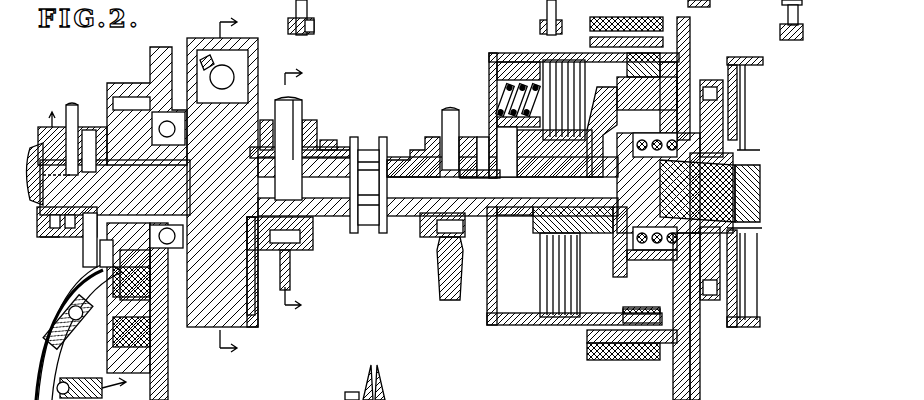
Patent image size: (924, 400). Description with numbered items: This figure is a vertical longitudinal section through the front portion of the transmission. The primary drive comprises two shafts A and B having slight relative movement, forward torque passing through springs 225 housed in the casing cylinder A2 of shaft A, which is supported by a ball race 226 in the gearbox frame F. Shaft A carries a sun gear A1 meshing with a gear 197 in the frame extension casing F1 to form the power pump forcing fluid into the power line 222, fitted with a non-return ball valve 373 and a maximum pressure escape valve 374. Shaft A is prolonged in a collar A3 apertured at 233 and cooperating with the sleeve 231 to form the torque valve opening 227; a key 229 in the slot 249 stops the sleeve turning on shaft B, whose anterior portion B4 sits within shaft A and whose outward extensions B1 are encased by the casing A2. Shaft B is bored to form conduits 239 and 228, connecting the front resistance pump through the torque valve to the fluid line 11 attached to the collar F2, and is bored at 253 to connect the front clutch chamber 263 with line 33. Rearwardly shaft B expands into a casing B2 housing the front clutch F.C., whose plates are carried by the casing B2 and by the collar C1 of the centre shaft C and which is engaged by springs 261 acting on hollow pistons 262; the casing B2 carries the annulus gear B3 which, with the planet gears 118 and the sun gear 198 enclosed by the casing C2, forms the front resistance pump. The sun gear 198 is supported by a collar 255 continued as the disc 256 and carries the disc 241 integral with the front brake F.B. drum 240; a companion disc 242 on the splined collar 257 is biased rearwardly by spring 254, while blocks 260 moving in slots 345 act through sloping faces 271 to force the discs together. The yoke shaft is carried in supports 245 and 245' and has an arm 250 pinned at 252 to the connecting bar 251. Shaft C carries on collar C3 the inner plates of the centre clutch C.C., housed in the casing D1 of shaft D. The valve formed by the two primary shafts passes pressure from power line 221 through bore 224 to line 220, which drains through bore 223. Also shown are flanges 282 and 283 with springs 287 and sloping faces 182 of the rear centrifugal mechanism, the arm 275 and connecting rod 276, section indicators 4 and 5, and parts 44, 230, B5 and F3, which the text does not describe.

The fluid line 11 is at (302, 110).
The line 33 is at (465, 120).
The pin 44 is at (448, 110).
The planet gears 118 is at (690, 56).
The sloping faces 182 is at (349, 393).
The gear 197 is at (150, 333).
The sun gear 198 is at (615, 268).
The line 220 is at (66, 110).
The power line 221 is at (90, 272).
The power pump line 222 is at (38, 350).
The bore 223 is at (60, 238).
The bore 224 is at (65, 245).
The springs 225 is at (300, 65).
The ball race 226 is at (145, 88).
The torque valve opening 227 is at (300, 127).
The conduit 228 is at (491, 192).
The key 229 is at (319, 190).
The spool valve 230 is at (370, 150).
The sleeve 231 is at (340, 232).
The aperture 233 is at (335, 140).
The conduit 239 is at (608, 160).
The front brake drum 240 is at (590, 340).
The disc 241 is at (673, 372).
The companion disc 242 is at (700, 365).
The supports 245 is at (714, 11).
The bolt 245' is at (796, 32).
The slot 249 is at (295, 200).
The arm 250 is at (308, 12).
The connecting bar 251 is at (293, 20).
The pin 252 is at (315, 27).
The bore 253 is at (530, 170).
The spring 254 is at (640, 250).
The collar 255 is at (745, 185).
The disc 256 is at (723, 97).
The collar 257 is at (740, 205).
The blocks 260 is at (720, 265).
The springs 261 is at (500, 78).
The hollow pistons 262 is at (492, 50).
The front clutch chamber 263 is at (512, 62).
The sloping faces 271 is at (745, 230).
The arm 275 is at (557, 8).
The connecting rod 276 is at (545, 20).
The annular flange 282 is at (368, 382).
The fixed flange 283 is at (382, 382).
The springs 287 is at (412, 393).
The slots 345 is at (720, 282).
The non-return ball valve 373 is at (76, 320).
The maximum pressure escape valve 374 is at (98, 389).
The section line 4- 4 is at (238, 187).
The section line 5- 5 is at (302, 190).
The shaft A is at (33, 148).
The sun gear A1 is at (108, 115).
The casing cylinder A2 is at (259, 42).
The collar A3 is at (335, 132).
The shaft B is at (400, 222).
The outward extensions B1 is at (248, 300).
The casing B2 is at (490, 56).
The annulus gear B3 is at (633, 60).
The anterior portion B4 is at (78, 238).
The hub B5 is at (613, 240).
The intermediate shaft C is at (720, 180).
The collar C1 is at (540, 222).
The casing C2 is at (612, 100).
The collar C3 is at (745, 235).
The shaft D is at (760, 185).
The cylindrical casing D1 is at (740, 57).
The gearbox frame F is at (168, 365).
The frame extension casing F1 is at (90, 130).
The collar F2 is at (310, 248).
The support F3 is at (450, 300).
The front clutch F.C. is at (545, 270).
The front brake F.B. is at (605, 360).
The centre clutch C.C. is at (742, 300).